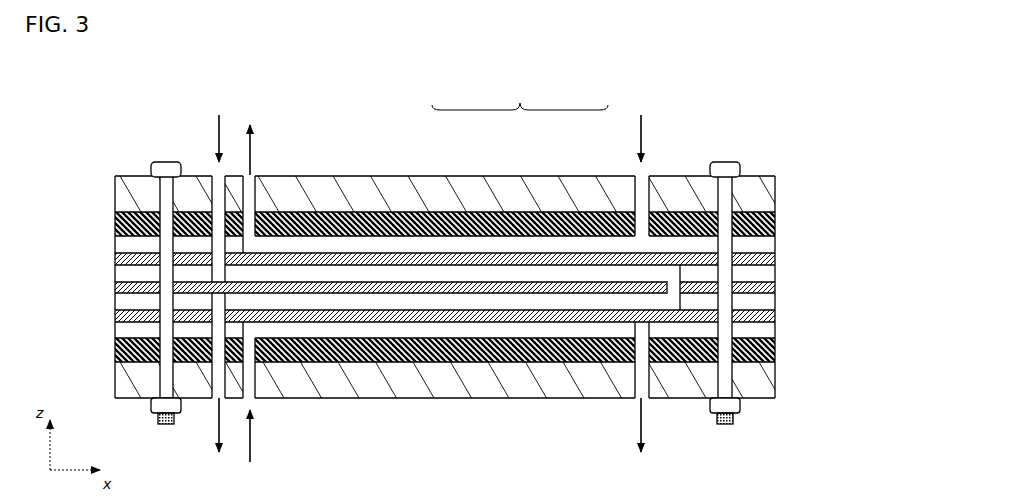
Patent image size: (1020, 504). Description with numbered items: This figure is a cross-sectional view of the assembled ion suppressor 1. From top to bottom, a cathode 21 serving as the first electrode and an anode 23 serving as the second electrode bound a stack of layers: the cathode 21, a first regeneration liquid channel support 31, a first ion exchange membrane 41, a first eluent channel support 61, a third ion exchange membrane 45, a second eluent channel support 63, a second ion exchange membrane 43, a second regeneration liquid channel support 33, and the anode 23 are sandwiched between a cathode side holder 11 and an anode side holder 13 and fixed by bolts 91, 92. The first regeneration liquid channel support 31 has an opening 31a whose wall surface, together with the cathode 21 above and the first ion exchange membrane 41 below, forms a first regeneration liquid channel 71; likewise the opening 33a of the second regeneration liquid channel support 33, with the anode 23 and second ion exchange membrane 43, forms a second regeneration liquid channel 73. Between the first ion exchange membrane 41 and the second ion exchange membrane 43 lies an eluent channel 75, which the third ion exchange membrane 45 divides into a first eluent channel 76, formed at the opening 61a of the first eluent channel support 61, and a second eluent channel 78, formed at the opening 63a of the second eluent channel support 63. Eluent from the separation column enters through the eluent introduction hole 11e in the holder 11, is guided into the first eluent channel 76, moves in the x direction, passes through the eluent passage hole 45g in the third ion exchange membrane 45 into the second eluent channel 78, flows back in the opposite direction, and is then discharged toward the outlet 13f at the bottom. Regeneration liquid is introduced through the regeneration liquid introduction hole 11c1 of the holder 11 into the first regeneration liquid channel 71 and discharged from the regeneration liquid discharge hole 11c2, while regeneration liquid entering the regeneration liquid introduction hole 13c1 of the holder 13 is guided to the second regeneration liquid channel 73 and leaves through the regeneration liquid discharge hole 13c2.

The ion suppressor 1 is at (88, 176).
The cathode side holder 11 is at (770, 195).
The regeneration liquid introduction hole 11c1 is at (630, 172).
The regeneration liquid discharge hole 11c2 is at (302, 174).
The eluent introduction hole 11e is at (210, 147).
The anode side holder 13 is at (773, 384).
The regeneration liquid introduction hole 13c1 is at (303, 424).
The regeneration liquid discharge hole 13c2 is at (632, 422).
The outlet of lower plate 13f is at (212, 434).
The cathode 21 is at (770, 222).
The anode 23 is at (770, 350).
The first regeneration liquid channel support 31 is at (770, 245).
The opening 31a is at (377, 183).
The second regeneration liquid channel support 33 is at (770, 330).
The opening 33a is at (384, 401).
The first ion exchange membrane 41 is at (772, 258).
The second ion exchange membrane 43 is at (772, 316).
The third ion exchange membrane 45 is at (770, 287).
The eluent passage hole 45g is at (673, 296).
The first eluent channel support 61 is at (770, 274).
The opening 61a is at (526, 189).
The second eluent channel support 63 is at (770, 302).
The opening 63a is at (452, 211).
The first regeneration liquid channel 71 is at (393, 249).
The second regeneration liquid channel 73 is at (397, 338).
The eluent channel 75 is at (520, 92).
The first eluent channel 76 is at (459, 271).
The second eluent channel 78 is at (406, 297).
The bolt 91 is at (158, 163).
The bolt 92 is at (728, 163).